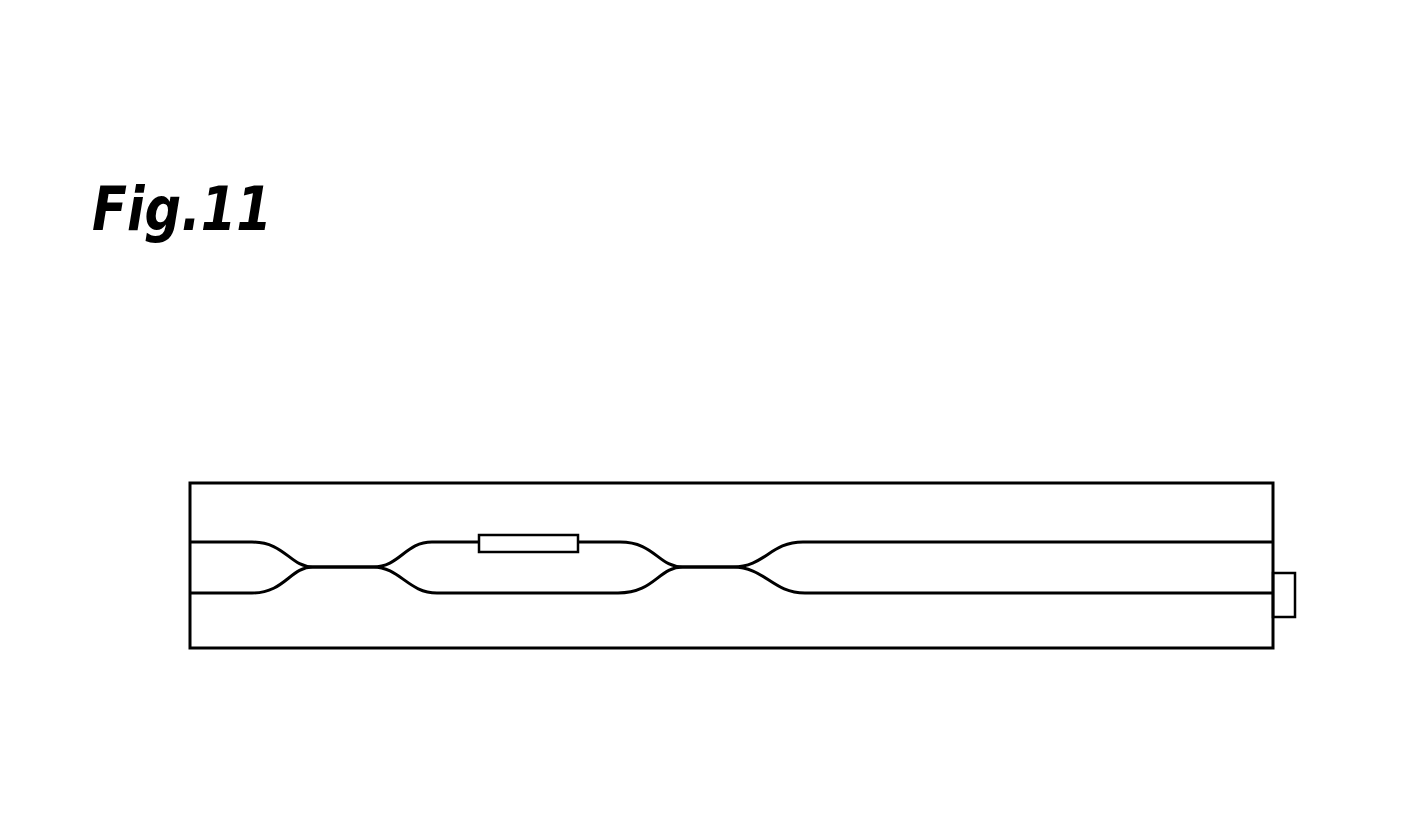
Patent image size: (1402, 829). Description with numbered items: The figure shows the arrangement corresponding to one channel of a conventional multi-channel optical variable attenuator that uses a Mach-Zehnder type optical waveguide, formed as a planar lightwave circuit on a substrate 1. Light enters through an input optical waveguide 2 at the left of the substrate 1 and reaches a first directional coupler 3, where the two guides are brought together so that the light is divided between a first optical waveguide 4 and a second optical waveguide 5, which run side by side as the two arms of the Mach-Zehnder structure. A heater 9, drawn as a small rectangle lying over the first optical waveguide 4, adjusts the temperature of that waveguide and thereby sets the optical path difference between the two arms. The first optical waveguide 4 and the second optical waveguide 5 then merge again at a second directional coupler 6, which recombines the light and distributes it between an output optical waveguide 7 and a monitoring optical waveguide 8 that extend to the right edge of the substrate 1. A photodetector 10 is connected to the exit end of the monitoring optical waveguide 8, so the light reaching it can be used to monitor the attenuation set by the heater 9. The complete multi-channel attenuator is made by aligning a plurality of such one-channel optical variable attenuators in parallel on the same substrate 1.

The substrate 1 is at (1025, 484).
The input optical waveguide 2 is at (238, 542).
The first directional coupler 3 is at (362, 567).
The first optical waveguide 4 is at (438, 542).
The second optical waveguide 5 is at (475, 593).
The second directional coupler 6 is at (703, 567).
The output optical waveguide 7 is at (895, 542).
The monitoring optical waveguide 8 is at (882, 593).
The heater 9 is at (537, 535).
The photodetector 10 is at (1296, 600).